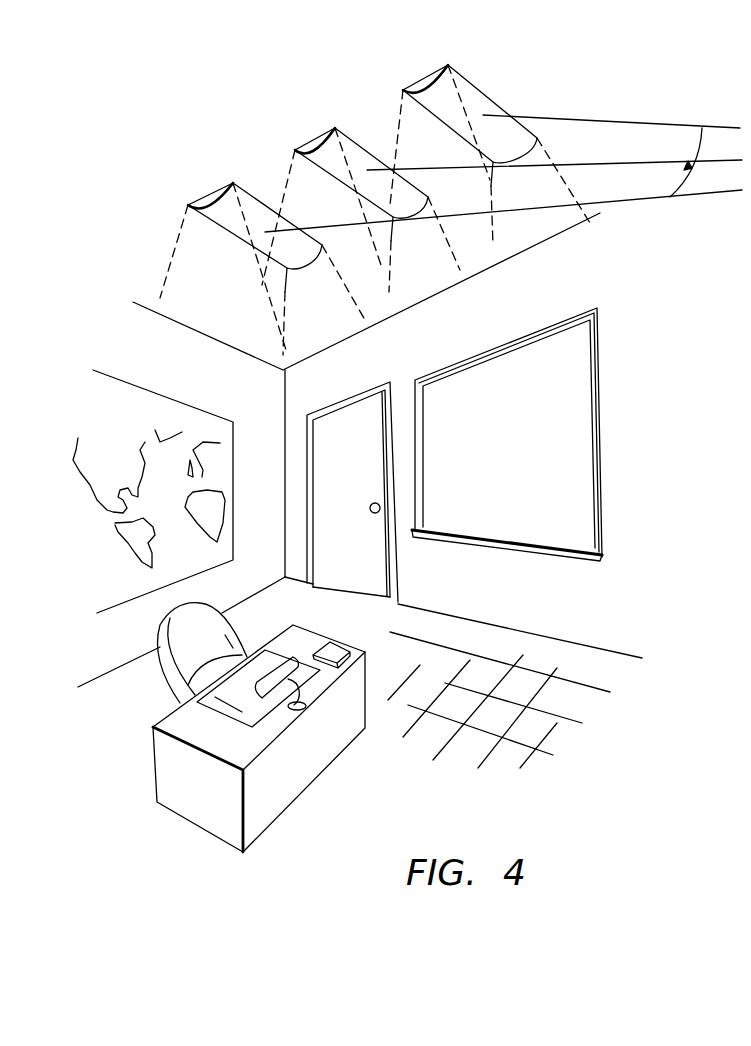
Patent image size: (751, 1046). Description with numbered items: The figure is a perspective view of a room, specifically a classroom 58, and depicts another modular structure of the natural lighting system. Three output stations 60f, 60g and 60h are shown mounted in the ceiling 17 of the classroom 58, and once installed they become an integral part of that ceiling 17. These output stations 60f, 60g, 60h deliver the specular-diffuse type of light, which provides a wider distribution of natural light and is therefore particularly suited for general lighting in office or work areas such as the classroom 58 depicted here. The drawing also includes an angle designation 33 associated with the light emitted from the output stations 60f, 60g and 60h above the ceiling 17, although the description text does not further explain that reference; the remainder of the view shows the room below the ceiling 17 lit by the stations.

The output station 60f is at (262, 269).
The output station 60g is at (361, 210).
The output station 60h is at (490, 155).
The ceiling 17 is at (246, 318).
The beam angle 33 is at (503, 173).
The classroom 58 is at (596, 591).